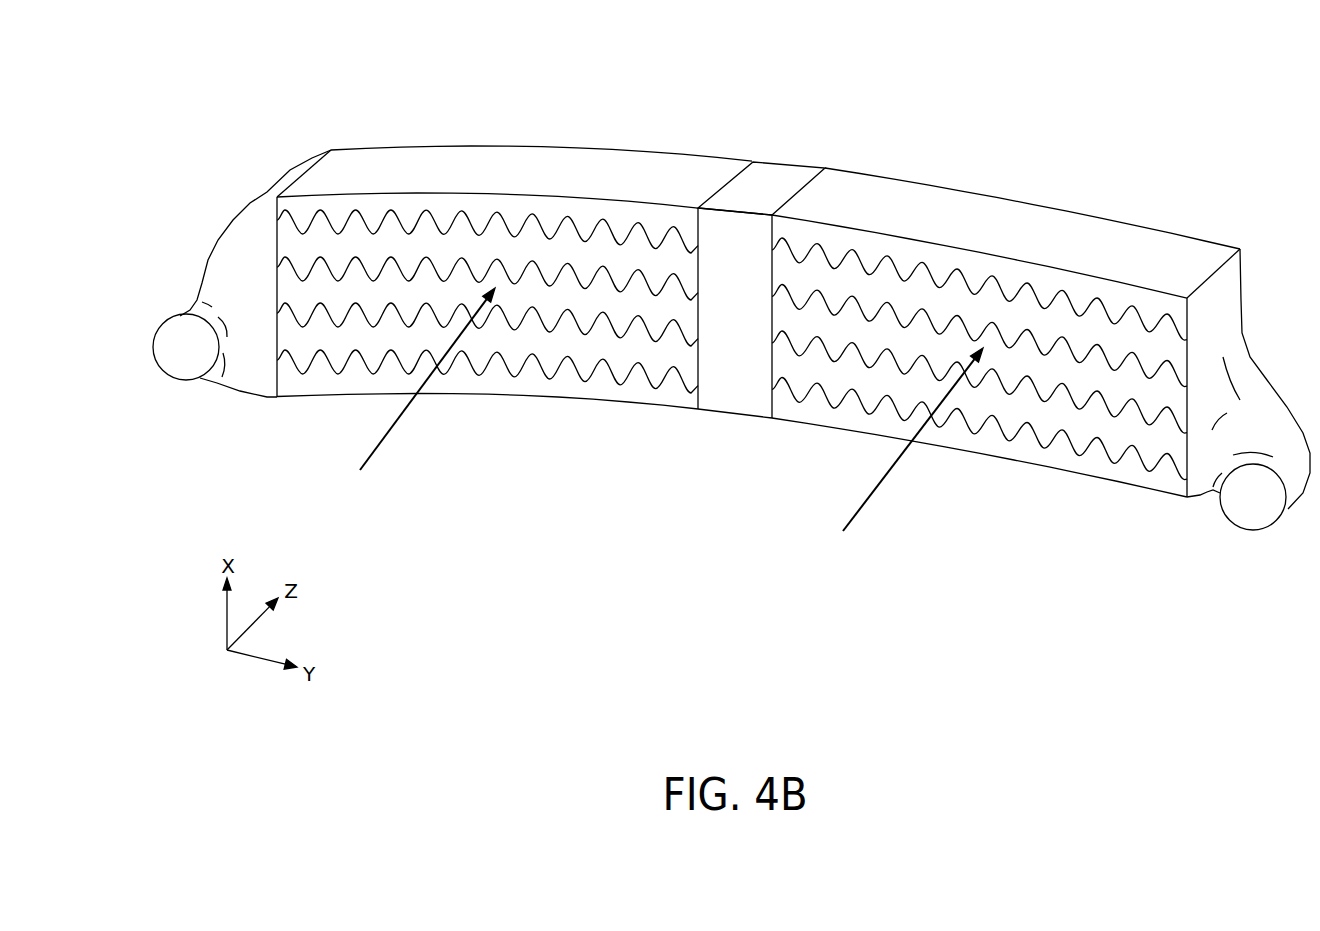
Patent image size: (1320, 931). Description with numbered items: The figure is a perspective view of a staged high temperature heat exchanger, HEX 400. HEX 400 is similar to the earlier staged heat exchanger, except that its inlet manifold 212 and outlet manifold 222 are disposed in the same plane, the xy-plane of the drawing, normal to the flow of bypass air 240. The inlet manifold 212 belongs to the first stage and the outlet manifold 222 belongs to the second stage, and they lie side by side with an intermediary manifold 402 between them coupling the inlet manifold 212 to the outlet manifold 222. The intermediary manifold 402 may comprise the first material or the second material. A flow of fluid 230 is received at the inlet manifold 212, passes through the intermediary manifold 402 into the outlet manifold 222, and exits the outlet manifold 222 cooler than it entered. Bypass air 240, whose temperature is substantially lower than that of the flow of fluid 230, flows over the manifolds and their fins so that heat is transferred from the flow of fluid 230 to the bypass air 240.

The HEX 400 is at (711, 323).
The outlet manifold 222 is at (507, 189).
The inlet manifold 212 is at (1007, 242).
The intermediary manifold 402 is at (717, 297).
The flow of fluid 230 is at (187, 347).
The bypass air 240 is at (387, 433).